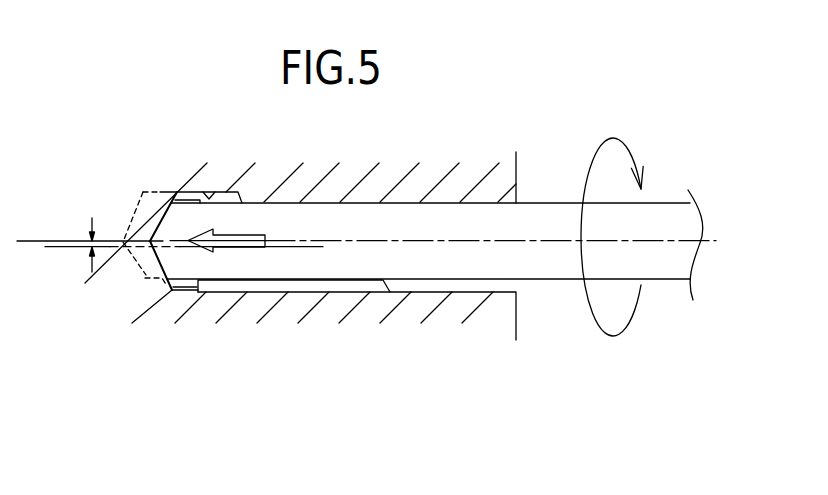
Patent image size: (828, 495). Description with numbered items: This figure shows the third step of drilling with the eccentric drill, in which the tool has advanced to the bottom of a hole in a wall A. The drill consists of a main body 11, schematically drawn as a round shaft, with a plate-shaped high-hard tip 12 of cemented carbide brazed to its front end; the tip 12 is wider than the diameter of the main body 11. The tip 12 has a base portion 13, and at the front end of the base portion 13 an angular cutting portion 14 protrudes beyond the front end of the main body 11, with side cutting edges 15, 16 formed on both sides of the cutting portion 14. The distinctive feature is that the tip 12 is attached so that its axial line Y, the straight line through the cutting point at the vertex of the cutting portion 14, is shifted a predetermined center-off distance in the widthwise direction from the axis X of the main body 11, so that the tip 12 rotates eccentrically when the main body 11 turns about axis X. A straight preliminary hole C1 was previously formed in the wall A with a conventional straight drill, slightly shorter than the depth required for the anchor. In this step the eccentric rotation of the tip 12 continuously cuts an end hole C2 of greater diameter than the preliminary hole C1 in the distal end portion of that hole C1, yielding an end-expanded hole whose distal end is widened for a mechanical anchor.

The main body 11 is at (549, 283).
The high-hard tip 12 is at (154, 215).
The base portion 13 is at (192, 288).
The cutting portion 14 is at (142, 273).
The side cutting edge 15 is at (181, 192).
The side cutting edge 16 is at (167, 293).
The preliminary hole C1 is at (393, 294).
The end hole C2 is at (215, 191).
The wall A is at (516, 173).
The axis X is at (453, 242).
The axial line Y is at (78, 243).